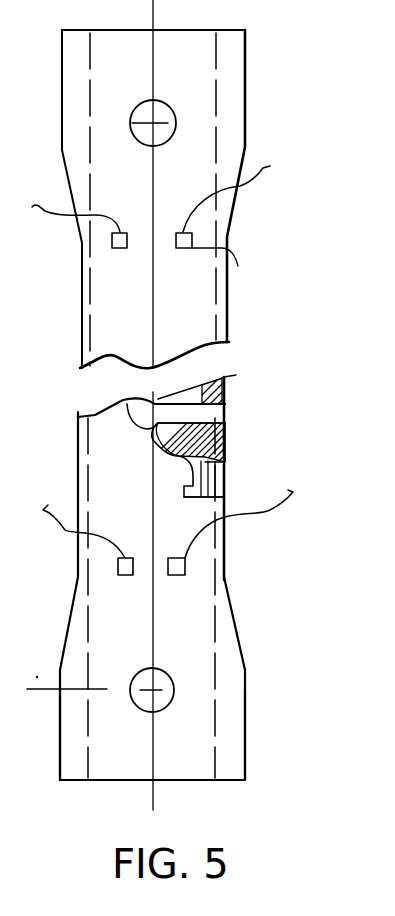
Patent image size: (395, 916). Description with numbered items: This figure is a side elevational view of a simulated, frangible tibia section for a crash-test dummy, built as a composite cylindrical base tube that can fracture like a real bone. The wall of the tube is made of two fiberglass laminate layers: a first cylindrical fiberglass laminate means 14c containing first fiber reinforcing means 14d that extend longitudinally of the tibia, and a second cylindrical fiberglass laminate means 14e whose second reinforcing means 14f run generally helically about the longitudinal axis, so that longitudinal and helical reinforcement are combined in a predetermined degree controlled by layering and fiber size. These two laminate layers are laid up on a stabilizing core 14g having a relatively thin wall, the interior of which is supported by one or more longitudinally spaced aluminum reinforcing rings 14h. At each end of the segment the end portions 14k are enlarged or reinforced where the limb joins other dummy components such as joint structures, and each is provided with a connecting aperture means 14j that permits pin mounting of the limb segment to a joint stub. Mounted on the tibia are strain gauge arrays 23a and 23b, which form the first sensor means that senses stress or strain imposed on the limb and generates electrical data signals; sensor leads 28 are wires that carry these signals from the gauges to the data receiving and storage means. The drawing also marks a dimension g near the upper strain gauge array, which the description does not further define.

The connecting aperture means 14j is at (176, 128).
The end portions 14k is at (225, 752).
The internal reinforcing rings 14h is at (227, 384).
The core 14g is at (224, 412).
The second cylindrical fiberglass laminate means 14e is at (224, 436).
The second reinforcing means 14f is at (175, 437).
The first fiber reinforcing means 14d is at (186, 482).
The first cylindrical fiberglass laminate means 14c is at (220, 493).
The strain gauge array 23a is at (176, 240).
The strain gauge array 23b is at (168, 568).
The leads 28 is at (245, 186).
The gap g is at (220, 268).